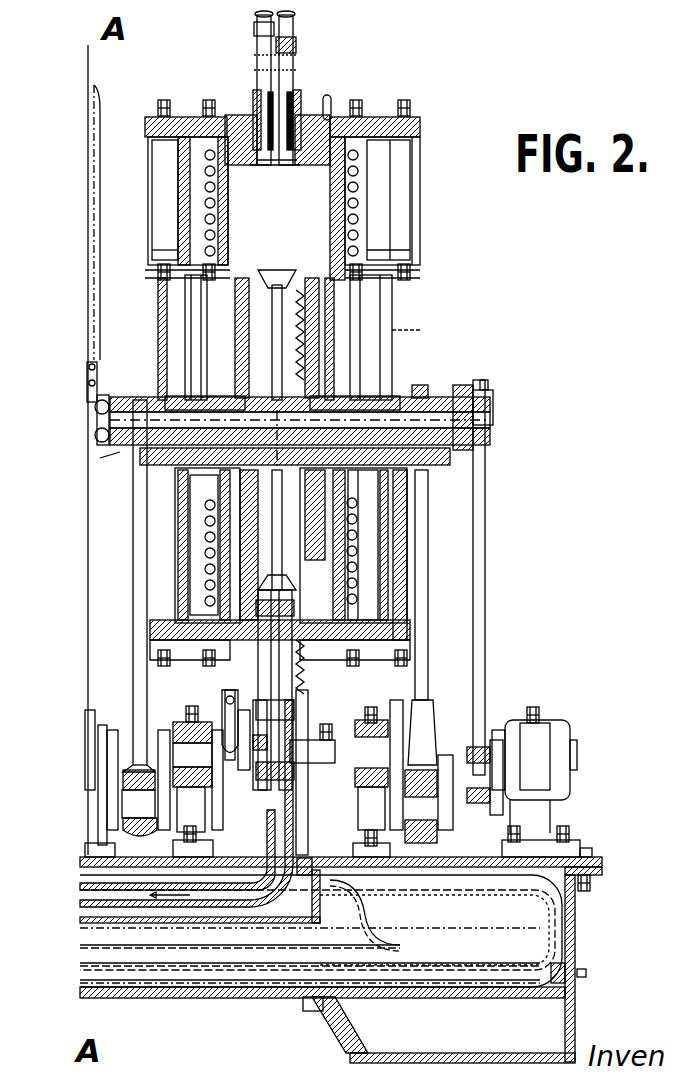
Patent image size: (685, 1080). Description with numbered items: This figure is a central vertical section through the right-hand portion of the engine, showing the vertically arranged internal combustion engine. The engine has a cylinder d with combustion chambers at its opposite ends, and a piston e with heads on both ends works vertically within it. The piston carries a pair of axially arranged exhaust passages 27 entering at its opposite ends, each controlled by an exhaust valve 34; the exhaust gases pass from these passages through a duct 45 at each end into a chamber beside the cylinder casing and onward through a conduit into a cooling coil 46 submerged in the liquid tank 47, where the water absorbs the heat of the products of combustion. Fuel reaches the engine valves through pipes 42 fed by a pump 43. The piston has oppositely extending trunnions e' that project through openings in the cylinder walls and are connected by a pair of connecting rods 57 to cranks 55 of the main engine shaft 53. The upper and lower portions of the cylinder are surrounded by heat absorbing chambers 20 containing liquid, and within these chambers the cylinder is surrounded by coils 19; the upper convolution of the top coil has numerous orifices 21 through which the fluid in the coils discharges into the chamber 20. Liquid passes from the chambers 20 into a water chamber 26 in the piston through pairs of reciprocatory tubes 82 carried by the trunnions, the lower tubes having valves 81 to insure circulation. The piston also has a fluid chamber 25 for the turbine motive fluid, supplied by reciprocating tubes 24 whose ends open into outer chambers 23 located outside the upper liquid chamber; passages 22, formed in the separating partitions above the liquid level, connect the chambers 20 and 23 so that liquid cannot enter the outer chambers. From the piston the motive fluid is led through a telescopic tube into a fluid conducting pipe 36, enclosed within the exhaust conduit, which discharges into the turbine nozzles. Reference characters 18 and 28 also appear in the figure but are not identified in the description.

The feed pipe 18 is at (120, 124).
The orifices 21 is at (198, 117).
The reciprocatory tubes 82 is at (160, 272).
The pipes 42 is at (327, 100).
The passages 22 is at (418, 138).
The coils 19 is at (178, 226).
The outer chambers 23 is at (152, 170).
The heat absorbing chambers 20 is at (205, 198).
The cylinder d is at (410, 248).
The exhaust passages 27 is at (258, 280).
The exhaust valves 34 is at (528, 645).
The valve spring 28 is at (312, 280).
The reciprocating tubes 24 is at (185, 298).
The water chamber 26 is at (158, 350).
The fluid chamber 25 is at (400, 372).
The piston e is at (444, 353).
The trunnions e' is at (73, 475).
The valves 81 is at (150, 628).
The connecting rods 57 is at (140, 697).
The main engine shaft 53 is at (575, 748).
The cranks 55 is at (510, 790).
The pump 43 is at (295, 870).
The fluid conducting pipe 36 is at (280, 905).
The duct 45 is at (226, 900).
The cooling coil 46 is at (162, 925).
The liquid tank 47 is at (192, 950).